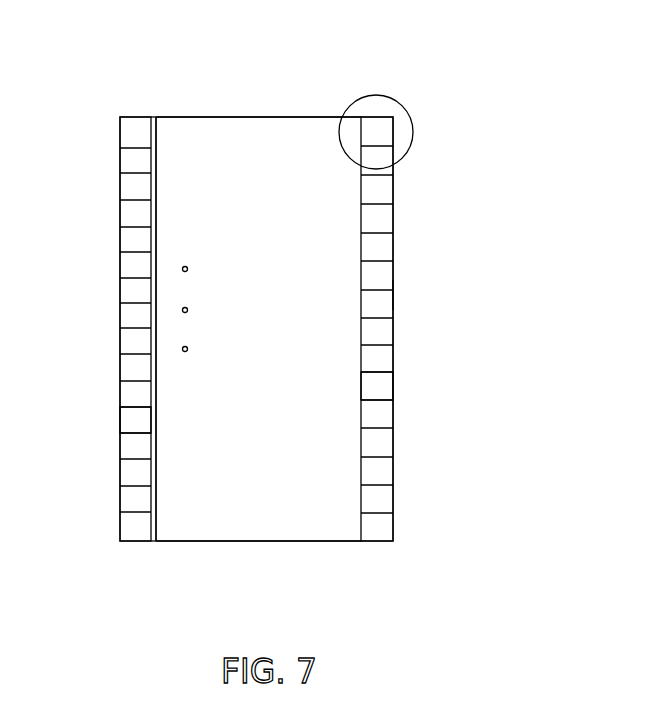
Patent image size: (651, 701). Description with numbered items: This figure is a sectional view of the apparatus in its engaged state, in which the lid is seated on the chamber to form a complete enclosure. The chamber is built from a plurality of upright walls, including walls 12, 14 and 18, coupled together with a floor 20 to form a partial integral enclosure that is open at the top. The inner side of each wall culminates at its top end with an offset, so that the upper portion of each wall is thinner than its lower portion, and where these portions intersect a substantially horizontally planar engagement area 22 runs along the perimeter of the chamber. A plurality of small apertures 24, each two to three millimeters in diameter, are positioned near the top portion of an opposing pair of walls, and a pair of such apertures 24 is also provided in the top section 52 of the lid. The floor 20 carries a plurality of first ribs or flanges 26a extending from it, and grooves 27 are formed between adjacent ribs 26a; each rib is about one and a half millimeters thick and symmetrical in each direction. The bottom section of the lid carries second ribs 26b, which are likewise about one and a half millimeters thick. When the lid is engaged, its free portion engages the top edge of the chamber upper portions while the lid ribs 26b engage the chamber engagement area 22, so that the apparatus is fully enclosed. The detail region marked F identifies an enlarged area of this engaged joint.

The upright wall 12 is at (267, 326).
The upright wall 14 is at (327, 543).
The upright wall 18 is at (252, 116).
The floor 20 is at (394, 297).
The engagement area 22 is at (158, 160).
The apertures 24 is at (182, 269).
The first ribs 26a is at (383, 203).
The second ribs 26b is at (128, 172).
The grooves 27 is at (384, 385).
The top section 52 is at (128, 417).
The detail region F is at (412, 108).